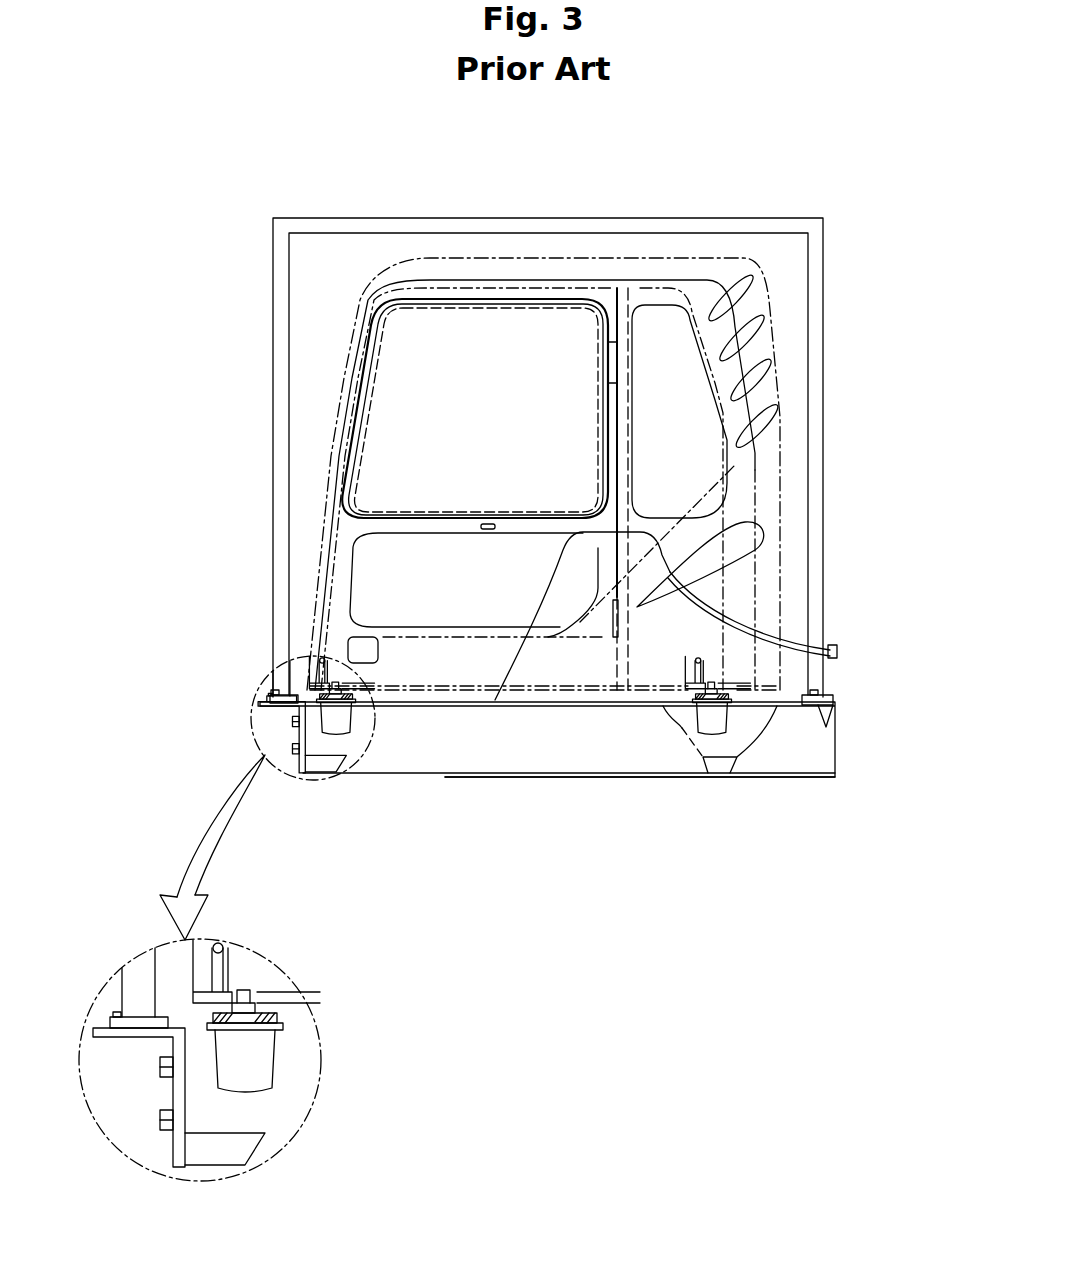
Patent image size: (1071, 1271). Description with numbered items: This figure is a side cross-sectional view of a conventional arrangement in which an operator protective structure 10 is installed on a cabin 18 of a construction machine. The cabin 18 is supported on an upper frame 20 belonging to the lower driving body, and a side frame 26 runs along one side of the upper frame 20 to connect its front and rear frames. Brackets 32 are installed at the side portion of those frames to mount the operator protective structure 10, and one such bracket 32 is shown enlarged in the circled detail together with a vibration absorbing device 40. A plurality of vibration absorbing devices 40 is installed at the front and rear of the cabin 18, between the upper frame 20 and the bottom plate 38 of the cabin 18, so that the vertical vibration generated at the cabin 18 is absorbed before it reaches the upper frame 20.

The operator protective structure 10 is at (822, 236).
The cabin 18 is at (390, 400).
The upper frame 20 is at (680, 792).
The side frame 26 is at (523, 737).
The bracket 32 is at (130, 1032).
The bottom plate 38 is at (605, 690).
The vibration absorbing device 40 is at (333, 718).